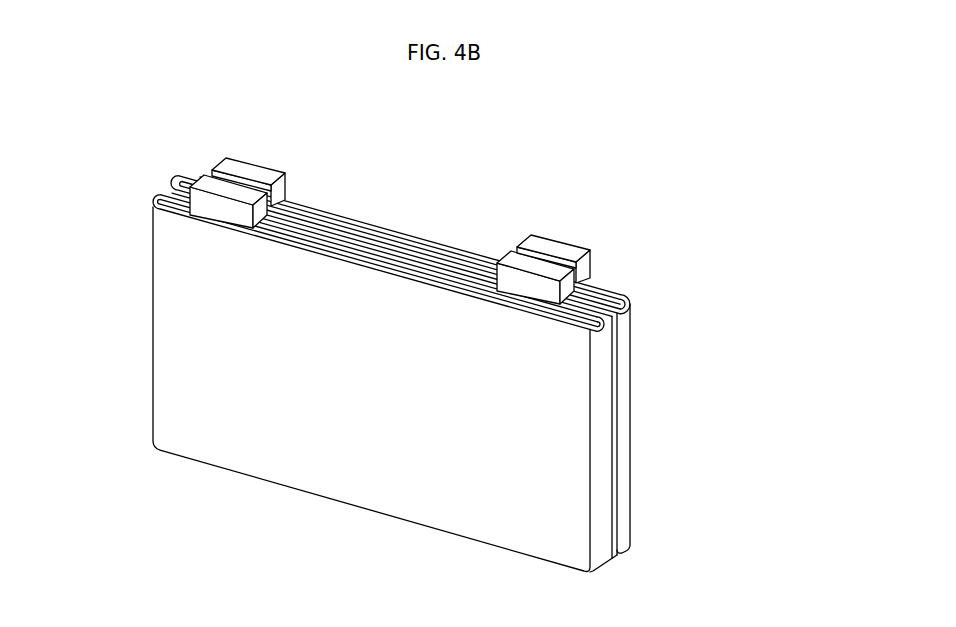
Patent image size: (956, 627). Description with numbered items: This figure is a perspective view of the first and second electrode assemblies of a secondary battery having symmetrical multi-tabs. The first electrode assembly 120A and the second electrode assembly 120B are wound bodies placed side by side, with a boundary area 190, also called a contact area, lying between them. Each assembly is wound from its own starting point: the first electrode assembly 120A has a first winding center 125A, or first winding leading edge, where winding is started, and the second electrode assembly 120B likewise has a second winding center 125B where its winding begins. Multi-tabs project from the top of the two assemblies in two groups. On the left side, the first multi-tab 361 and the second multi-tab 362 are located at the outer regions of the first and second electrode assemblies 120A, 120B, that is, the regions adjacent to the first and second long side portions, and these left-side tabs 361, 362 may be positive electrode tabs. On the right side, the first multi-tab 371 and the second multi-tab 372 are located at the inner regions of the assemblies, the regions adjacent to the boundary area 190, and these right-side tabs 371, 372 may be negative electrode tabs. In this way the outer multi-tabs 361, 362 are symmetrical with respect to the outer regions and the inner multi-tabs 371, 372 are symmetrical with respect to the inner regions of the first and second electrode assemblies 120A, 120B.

The first electrode assembly 120A is at (632, 408).
The second electrode assembly 120B is at (597, 498).
The first winding center 125A is at (618, 293).
The second winding center 125B is at (610, 318).
The boundary area 190 is at (375, 247).
The first multi-tab 361 is at (250, 170).
The second multi-tab 362 is at (202, 181).
The first multi-tab 371 is at (545, 260).
The second multi-tab 372 is at (485, 267).